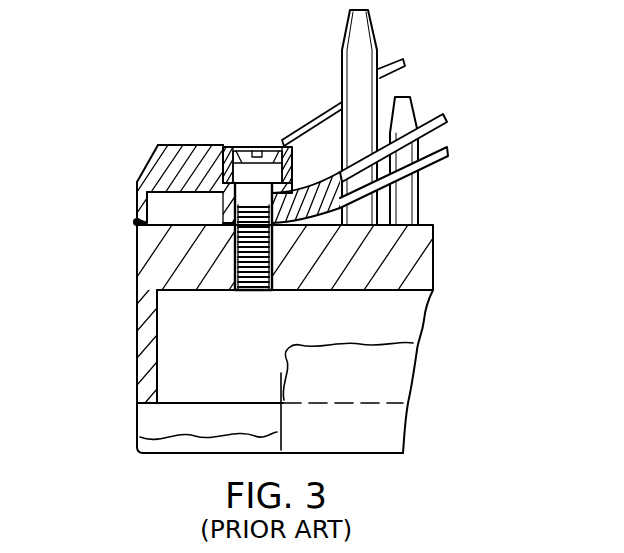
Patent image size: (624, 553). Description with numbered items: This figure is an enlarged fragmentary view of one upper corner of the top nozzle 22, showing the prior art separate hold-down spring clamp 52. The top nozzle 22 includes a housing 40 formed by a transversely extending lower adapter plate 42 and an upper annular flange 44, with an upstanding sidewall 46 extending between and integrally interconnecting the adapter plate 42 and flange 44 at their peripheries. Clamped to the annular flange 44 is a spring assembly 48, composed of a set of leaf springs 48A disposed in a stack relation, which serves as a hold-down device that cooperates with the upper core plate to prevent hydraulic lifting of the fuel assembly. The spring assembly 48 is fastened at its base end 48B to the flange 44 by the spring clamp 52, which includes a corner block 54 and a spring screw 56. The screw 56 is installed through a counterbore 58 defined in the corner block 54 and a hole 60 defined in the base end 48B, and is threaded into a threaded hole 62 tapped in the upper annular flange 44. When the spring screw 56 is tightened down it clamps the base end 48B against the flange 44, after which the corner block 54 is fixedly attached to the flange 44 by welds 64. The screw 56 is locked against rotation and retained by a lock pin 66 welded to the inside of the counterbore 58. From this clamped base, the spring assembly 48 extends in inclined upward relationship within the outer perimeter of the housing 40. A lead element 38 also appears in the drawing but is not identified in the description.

The top nozzle 22 is at (470, 232).
The lead wire 38 is at (308, 120).
The housing 40 is at (135, 320).
The lower adapter plate 42 is at (337, 430).
The upper annular flange 44 is at (183, 272).
The upstanding sidewall 46 is at (137, 372).
The spring assembly 48 is at (436, 103).
The leaf springs 48A is at (440, 157).
The base end 48B is at (272, 213).
The spring clamp 52 is at (141, 151).
The corner block 54 is at (162, 147).
The spring screw 56 is at (178, 232).
The counterbore 58 is at (147, 190).
The hole 60 is at (252, 202).
The threaded hole 62 is at (252, 293).
The welds 64 is at (133, 221).
The lock pin 66 is at (230, 147).